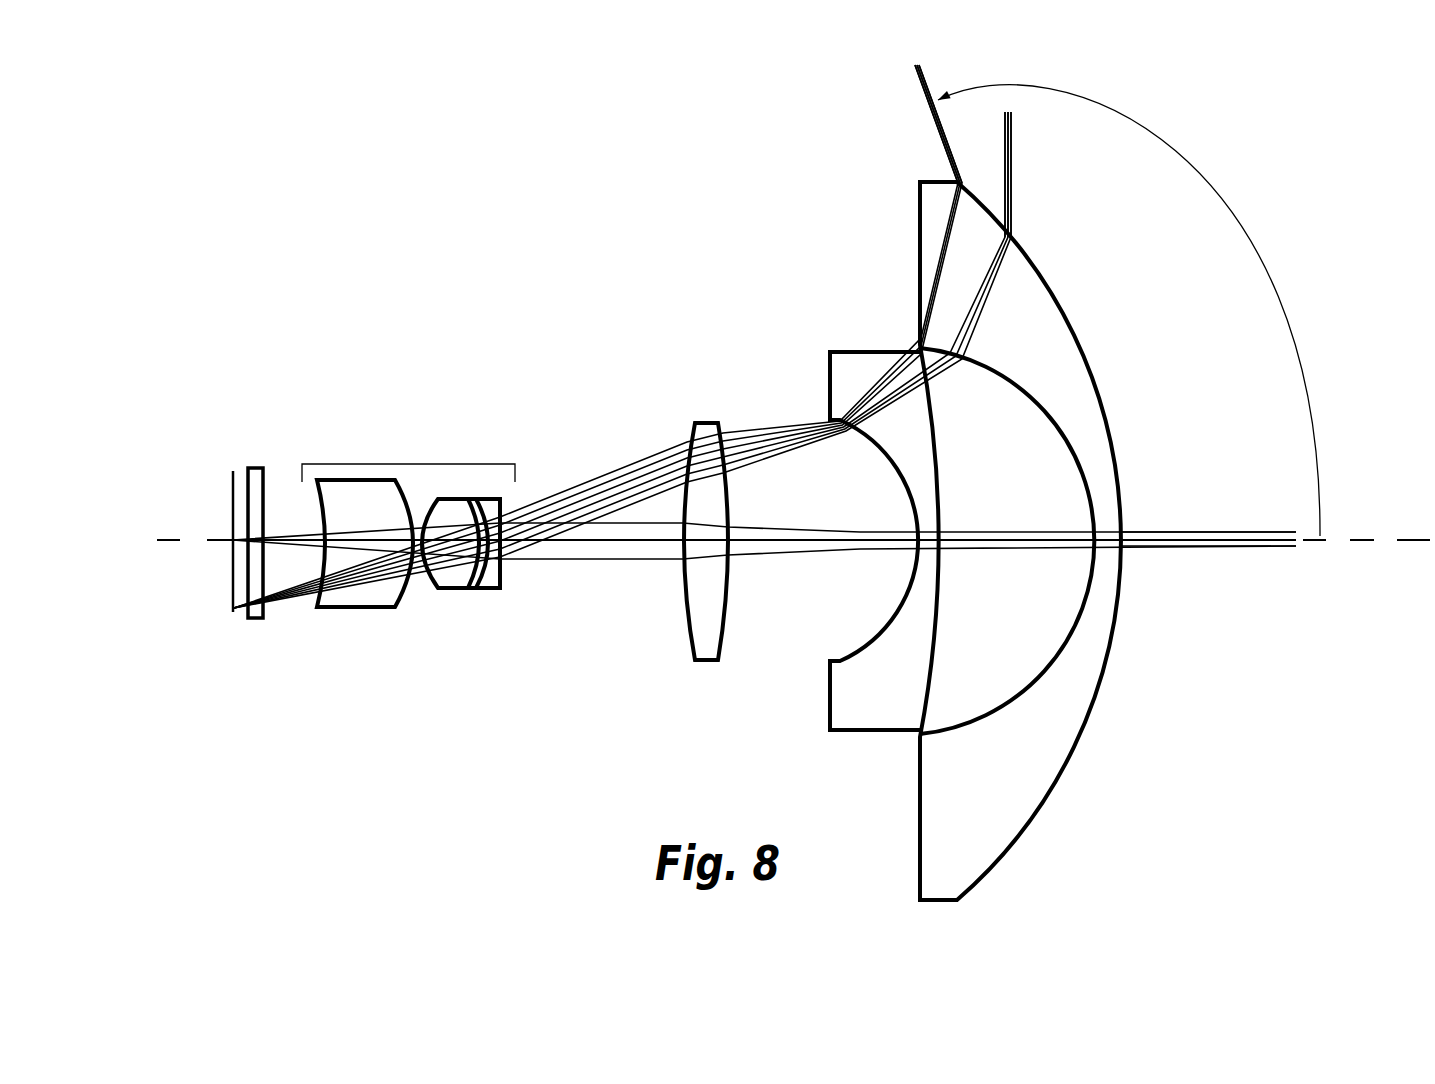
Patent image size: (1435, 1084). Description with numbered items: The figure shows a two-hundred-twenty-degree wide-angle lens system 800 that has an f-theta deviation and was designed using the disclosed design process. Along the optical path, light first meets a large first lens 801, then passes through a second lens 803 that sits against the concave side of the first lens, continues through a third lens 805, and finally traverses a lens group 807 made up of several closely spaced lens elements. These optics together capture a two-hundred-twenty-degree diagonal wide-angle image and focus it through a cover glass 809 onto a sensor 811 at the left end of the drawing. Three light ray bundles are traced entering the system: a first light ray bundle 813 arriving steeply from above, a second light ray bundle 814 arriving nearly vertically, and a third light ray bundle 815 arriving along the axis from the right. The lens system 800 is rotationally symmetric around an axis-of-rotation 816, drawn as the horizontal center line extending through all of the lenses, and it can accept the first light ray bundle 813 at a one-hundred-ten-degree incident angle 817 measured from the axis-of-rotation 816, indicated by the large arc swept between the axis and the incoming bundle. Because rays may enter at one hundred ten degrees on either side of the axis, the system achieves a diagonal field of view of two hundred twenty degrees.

The wide-angle lens system 800 is at (301, 740).
The first lens 801 is at (1004, 814).
The second lens 803 is at (898, 704).
The third lens 805 is at (708, 422).
The lens group 807 is at (447, 462).
The cover glass 809 is at (256, 466).
The sensor 811 is at (232, 490).
The first light ray bundle 813 is at (950, 148).
The second light ray bundle 814 is at (1003, 162).
The third light ray bundle 815 is at (1188, 553).
The axis-of-rotation 816 is at (172, 546).
The incident angle 817 is at (1298, 362).